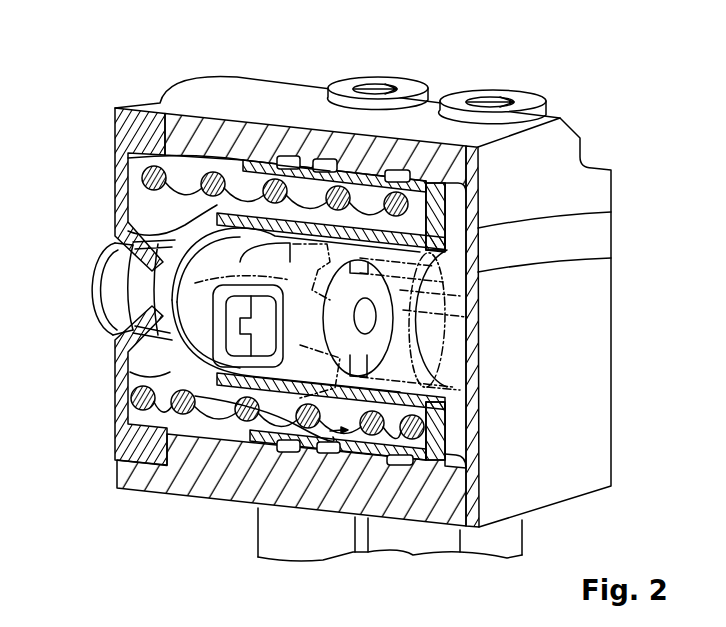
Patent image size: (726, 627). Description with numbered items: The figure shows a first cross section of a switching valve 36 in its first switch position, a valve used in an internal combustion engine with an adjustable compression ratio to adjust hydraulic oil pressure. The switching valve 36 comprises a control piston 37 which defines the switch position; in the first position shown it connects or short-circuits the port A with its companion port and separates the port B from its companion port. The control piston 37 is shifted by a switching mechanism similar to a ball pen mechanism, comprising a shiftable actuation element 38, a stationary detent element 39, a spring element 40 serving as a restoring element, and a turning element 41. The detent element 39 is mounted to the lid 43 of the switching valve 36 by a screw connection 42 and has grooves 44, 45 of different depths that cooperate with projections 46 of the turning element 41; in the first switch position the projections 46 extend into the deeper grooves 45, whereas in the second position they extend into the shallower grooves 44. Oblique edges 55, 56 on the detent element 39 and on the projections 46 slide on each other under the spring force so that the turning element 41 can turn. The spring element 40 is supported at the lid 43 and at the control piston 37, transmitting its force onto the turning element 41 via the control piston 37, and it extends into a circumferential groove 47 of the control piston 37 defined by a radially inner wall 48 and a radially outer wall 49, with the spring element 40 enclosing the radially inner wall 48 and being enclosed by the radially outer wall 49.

The switching valve 36 is at (541, 73).
The control piston 37 is at (611, 212).
The actuation element 38 is at (611, 258).
The detent element 39 is at (190, 303).
The spring element 40 is at (140, 174).
The turning element 41 is at (170, 313).
The screw connection 42 is at (117, 267).
The lid 43 is at (121, 136).
The shorter or shallower grooves 44 is at (130, 376).
The longer or deeper grooves 45 is at (385, 258).
The projections 46 is at (256, 268).
The circumferential groove 47 is at (306, 442).
The radially inner wall 48 is at (362, 182).
The radially outer wall 49 is at (348, 232).
The oblique edge 55 is at (270, 445).
The oblique edge 56 is at (327, 489).
The port A is at (285, 147).
The port B is at (404, 158).